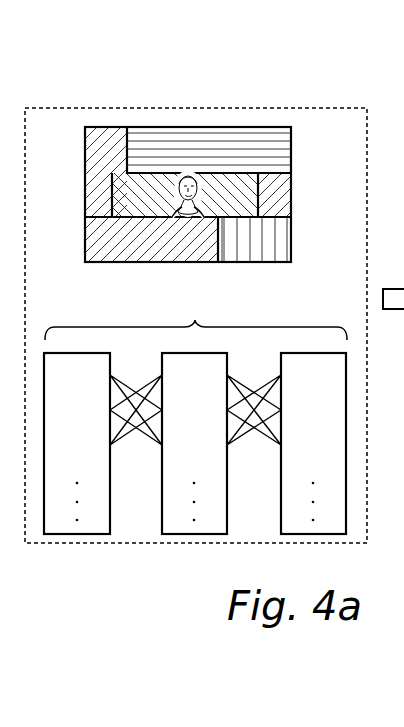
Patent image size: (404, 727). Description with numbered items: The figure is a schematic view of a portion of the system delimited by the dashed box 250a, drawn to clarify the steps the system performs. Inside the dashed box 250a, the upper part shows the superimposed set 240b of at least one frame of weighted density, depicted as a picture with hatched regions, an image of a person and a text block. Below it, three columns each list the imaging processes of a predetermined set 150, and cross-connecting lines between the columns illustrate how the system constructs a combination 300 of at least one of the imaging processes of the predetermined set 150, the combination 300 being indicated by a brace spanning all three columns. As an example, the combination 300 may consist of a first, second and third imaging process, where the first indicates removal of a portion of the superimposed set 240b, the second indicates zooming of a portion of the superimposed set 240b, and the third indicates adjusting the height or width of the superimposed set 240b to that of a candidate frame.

The dashed box portion of the system 250a is at (101, 108).
The superimposed set 240b is at (285, 127).
The combination 300 is at (195, 457).
The predetermined set 150 is at (75, 534).